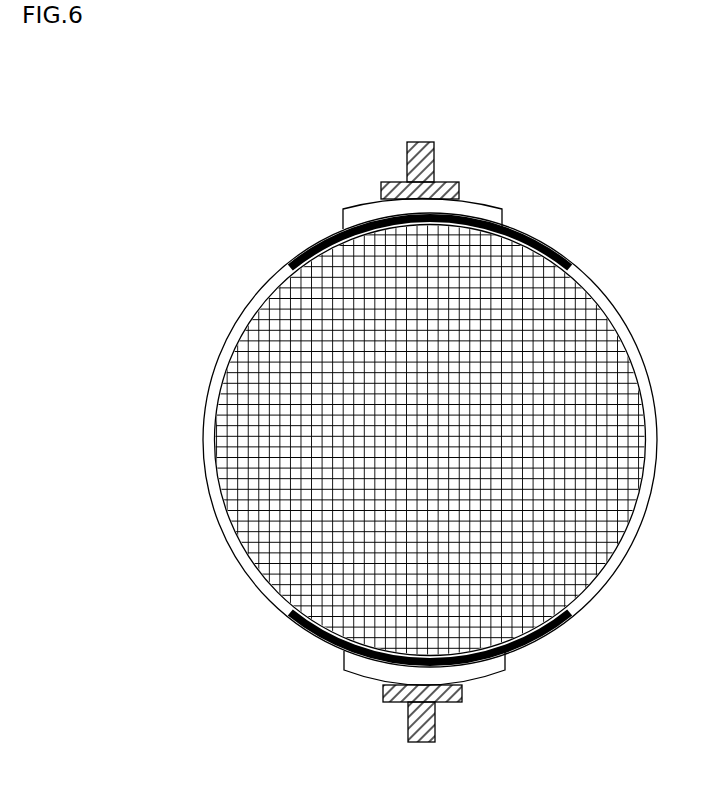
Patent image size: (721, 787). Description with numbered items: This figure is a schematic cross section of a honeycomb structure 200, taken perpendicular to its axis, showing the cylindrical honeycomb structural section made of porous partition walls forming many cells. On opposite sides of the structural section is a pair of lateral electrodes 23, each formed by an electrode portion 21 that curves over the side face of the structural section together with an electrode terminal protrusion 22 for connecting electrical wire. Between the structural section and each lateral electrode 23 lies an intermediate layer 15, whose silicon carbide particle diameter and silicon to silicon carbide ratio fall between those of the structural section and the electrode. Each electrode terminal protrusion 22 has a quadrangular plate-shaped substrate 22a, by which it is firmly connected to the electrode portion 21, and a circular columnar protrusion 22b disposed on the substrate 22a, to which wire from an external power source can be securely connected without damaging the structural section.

The honeycomb structure 200 is at (704, 90).
The intermediate layer 15 is at (556, 254).
The electrode portion 21 is at (488, 218).
The electrode terminal protrusion 22 is at (543, 137).
The substrate 22a is at (445, 190).
The protrusion 22b is at (420, 158).
The lateral electrode 23 is at (587, 143).